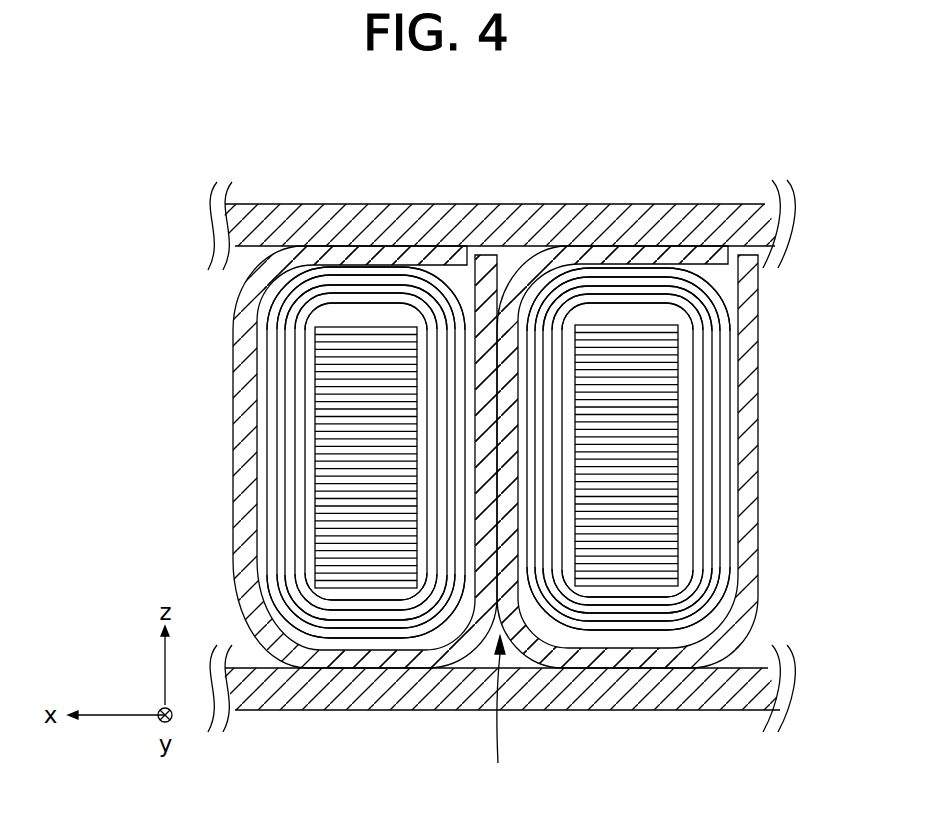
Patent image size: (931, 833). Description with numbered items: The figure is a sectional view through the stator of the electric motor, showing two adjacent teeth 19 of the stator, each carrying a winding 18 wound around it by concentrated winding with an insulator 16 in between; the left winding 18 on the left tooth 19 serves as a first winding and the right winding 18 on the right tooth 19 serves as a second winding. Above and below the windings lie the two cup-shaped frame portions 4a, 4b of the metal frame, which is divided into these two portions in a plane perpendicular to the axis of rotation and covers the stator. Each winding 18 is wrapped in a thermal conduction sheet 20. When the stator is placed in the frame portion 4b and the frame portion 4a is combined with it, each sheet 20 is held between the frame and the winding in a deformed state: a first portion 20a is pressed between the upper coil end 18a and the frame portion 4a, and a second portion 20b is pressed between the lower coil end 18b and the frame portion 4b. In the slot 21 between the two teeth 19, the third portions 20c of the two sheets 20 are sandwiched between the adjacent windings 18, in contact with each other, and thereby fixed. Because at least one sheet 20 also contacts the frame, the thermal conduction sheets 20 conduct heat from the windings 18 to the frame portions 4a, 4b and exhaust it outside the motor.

The frame portion 4a is at (296, 226).
The frame portion 4b is at (307, 692).
The insulator 16 is at (310, 366).
The winding 18 is at (275, 410).
The coil end 18a is at (360, 296).
The coil end 18b is at (362, 623).
The tooth 19 is at (355, 462).
The thermal conduction sheet 20 is at (238, 505).
The first portion 20a is at (398, 256).
The second portion 20b is at (398, 657).
The third portion 20c is at (510, 432).
The slot 21 is at (499, 711).